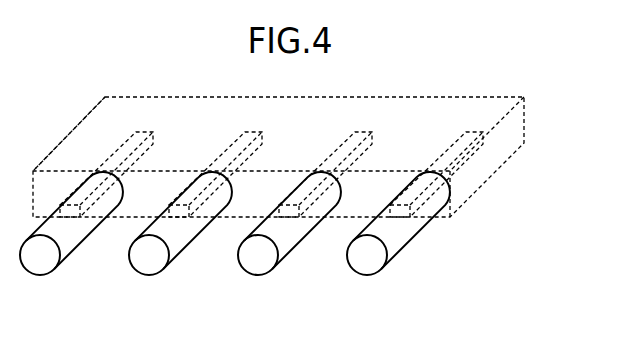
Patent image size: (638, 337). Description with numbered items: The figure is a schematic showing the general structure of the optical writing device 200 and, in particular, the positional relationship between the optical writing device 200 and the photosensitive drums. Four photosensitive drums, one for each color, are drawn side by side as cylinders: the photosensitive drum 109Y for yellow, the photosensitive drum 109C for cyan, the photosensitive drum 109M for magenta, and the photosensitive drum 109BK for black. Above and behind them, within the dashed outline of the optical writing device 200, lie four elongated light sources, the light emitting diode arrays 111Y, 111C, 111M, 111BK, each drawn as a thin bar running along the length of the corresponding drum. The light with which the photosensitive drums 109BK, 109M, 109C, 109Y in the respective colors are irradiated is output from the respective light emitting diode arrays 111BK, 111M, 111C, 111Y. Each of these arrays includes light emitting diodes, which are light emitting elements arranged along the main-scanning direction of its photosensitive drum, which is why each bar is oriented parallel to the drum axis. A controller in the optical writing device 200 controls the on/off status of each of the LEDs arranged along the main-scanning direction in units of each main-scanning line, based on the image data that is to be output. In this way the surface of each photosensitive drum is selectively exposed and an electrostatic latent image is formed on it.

The optical writing device 200 is at (524, 118).
The light emitting diode array (LEDA) for yellow 111Y is at (144, 132).
The light emitting diode array (LEDA) for cyan 111C is at (253, 132).
The light emitting diode array (LEDA) for magenta 111M is at (362, 132).
The light emitting diode array (LEDA) for black 111BK is at (471, 132).
The photosensitive drum for yellow 109Y is at (50, 275).
The photosensitive drum for cyan 109C is at (159, 275).
The photosensitive drum for magenta 109M is at (268, 275).
The photosensitive drum for black 109BK is at (377, 275).